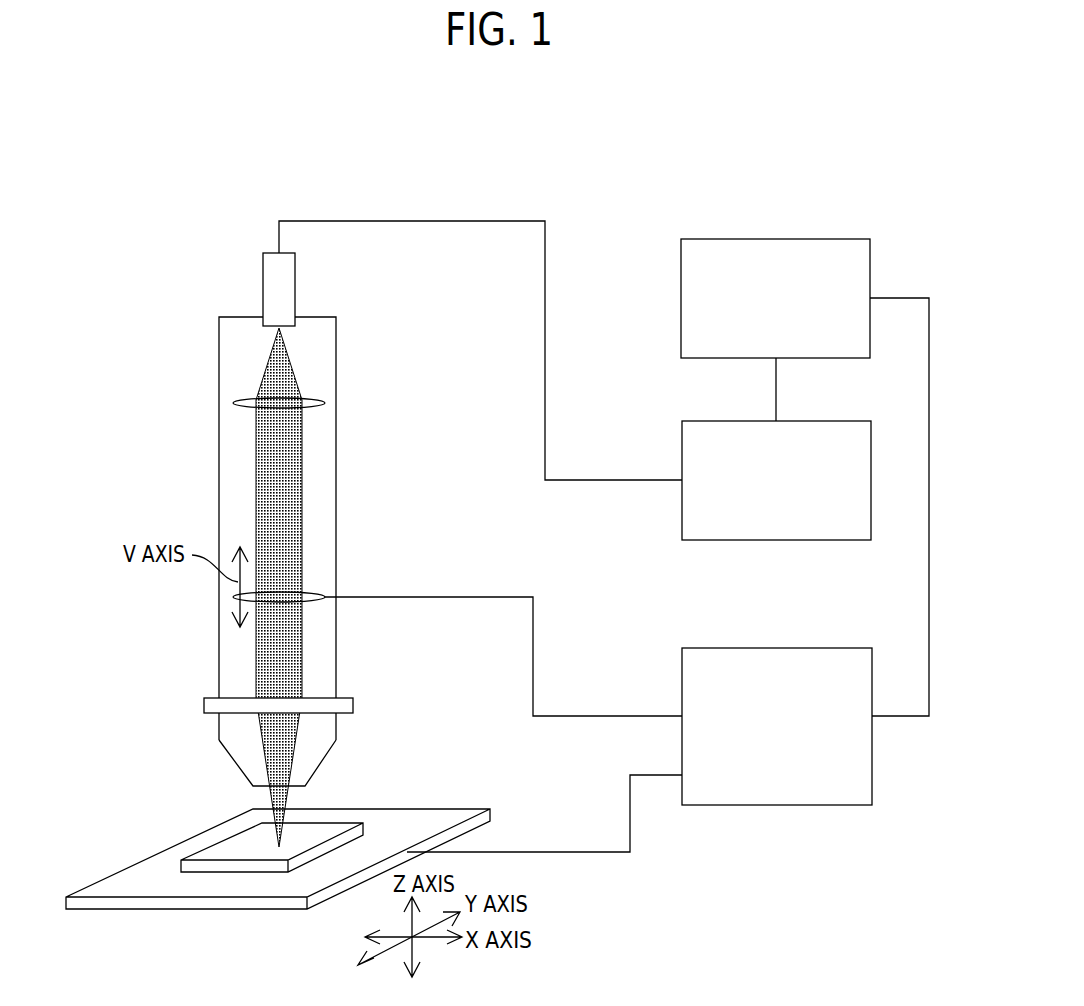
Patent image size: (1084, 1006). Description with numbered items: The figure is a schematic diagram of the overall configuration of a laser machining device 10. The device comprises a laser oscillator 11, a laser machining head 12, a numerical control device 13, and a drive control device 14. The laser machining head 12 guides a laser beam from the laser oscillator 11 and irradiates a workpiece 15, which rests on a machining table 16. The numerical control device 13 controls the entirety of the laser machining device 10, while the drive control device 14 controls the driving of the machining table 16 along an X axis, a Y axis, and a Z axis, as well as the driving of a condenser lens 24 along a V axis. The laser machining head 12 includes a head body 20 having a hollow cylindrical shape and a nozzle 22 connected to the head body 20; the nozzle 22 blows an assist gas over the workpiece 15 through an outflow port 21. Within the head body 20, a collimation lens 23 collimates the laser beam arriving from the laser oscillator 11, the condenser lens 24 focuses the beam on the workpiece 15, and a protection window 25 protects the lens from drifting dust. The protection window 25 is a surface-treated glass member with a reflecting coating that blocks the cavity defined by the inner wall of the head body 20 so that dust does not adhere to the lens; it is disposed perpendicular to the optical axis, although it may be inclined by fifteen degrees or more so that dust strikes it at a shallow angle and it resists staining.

The laser machining device 10 is at (778, 155).
The laser oscillator 11 is at (720, 543).
The laser machining head 12 is at (222, 297).
The numerical control device 13 is at (830, 239).
The drive control device 14 is at (825, 648).
The workpiece 15 is at (262, 851).
The machining table 16 is at (155, 891).
The head body 20 is at (336, 452).
The outflow port 21 is at (300, 790).
The nozzle 22 is at (322, 765).
The collimation lens 23 is at (310, 400).
The condenser lens 24 is at (310, 597).
The protection window 25 is at (348, 700).